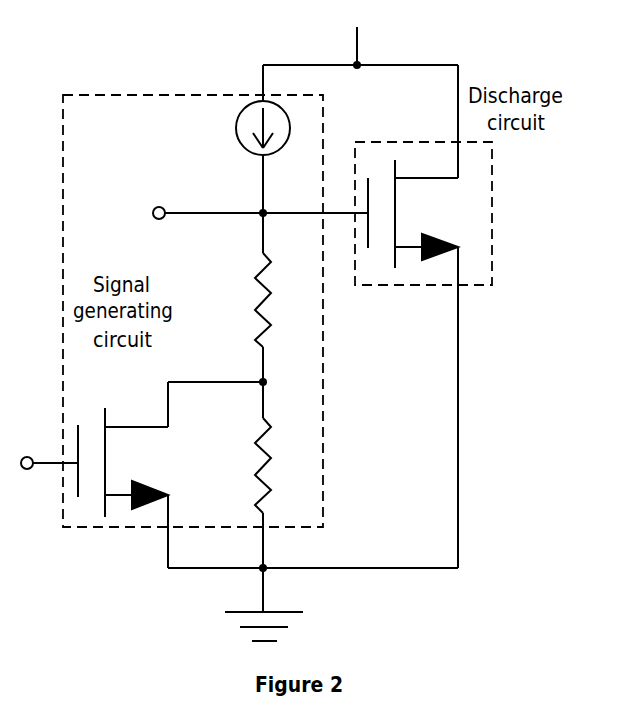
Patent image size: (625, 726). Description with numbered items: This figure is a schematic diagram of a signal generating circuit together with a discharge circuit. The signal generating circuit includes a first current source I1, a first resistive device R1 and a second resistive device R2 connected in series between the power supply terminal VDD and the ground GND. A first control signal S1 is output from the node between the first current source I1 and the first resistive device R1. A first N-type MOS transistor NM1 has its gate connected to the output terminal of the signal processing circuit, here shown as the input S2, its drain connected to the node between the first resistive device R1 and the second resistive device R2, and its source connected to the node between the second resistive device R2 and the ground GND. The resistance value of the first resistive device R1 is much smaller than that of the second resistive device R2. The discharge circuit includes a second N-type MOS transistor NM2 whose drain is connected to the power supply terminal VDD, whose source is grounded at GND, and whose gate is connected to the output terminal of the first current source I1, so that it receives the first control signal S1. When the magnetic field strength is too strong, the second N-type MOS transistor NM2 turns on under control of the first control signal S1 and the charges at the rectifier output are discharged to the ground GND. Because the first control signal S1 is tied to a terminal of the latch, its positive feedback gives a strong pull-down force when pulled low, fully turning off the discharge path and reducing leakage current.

The supply voltage terminal VDD is at (382, 26).
The first current source I1 is at (273, 128).
The first control signal S1 is at (164, 201).
The second signal terminal S2 is at (49, 451).
The first resistive device R1 is at (281, 300).
The second resistive device R2 is at (281, 465).
The first N-type MOS transistor NM1 is at (137, 462).
The second N-type MOS transistor NM2 is at (426, 214).
The ground terminal GND is at (282, 631).